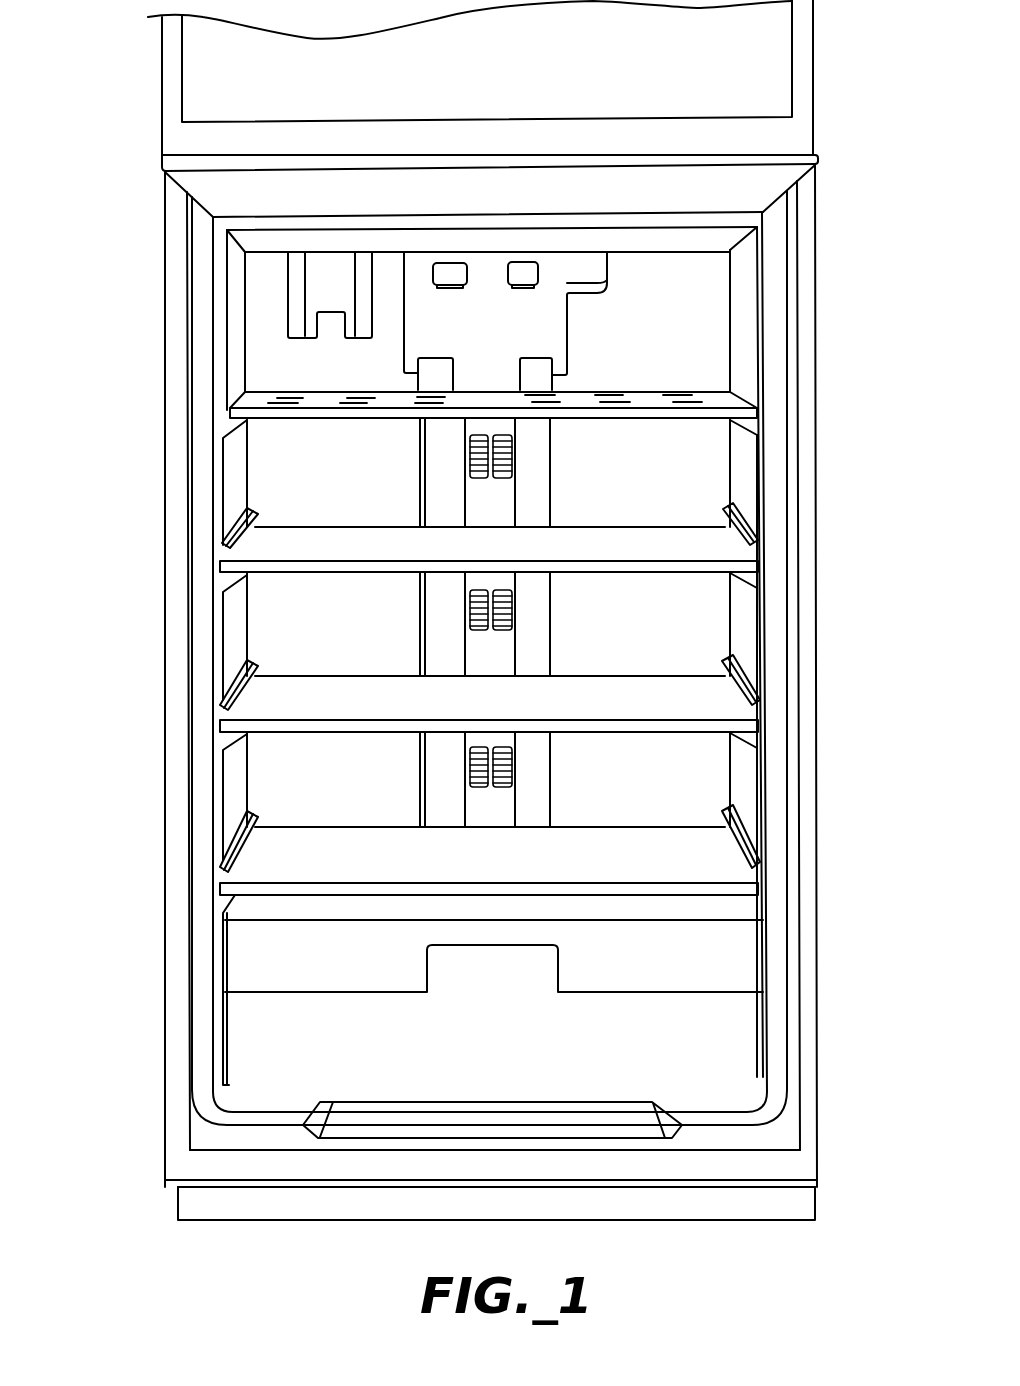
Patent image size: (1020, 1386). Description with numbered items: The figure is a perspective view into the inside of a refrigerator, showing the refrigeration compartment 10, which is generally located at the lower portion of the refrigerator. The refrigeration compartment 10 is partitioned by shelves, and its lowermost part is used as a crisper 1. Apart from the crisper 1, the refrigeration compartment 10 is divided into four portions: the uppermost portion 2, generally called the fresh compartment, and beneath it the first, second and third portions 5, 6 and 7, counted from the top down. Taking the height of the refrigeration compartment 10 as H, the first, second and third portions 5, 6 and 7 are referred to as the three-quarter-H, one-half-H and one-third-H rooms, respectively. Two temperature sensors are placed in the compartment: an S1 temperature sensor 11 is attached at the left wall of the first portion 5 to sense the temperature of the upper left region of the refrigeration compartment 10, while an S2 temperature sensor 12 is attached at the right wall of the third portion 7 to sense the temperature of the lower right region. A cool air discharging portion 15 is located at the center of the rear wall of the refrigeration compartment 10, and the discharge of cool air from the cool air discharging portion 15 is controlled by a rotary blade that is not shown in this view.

The refrigeration compartment 10 is at (150, 338).
The crisper 1 is at (740, 1050).
The uppermost portion 2 is at (718, 344).
The first portion 5 is at (710, 502).
The second portion 6 is at (708, 623).
The third portion 7 is at (683, 765).
The S1 temperature sensor 11 is at (233, 463).
The S2 temperature sensor 12 is at (748, 782).
The cool air discharging portion 15 is at (502, 498).